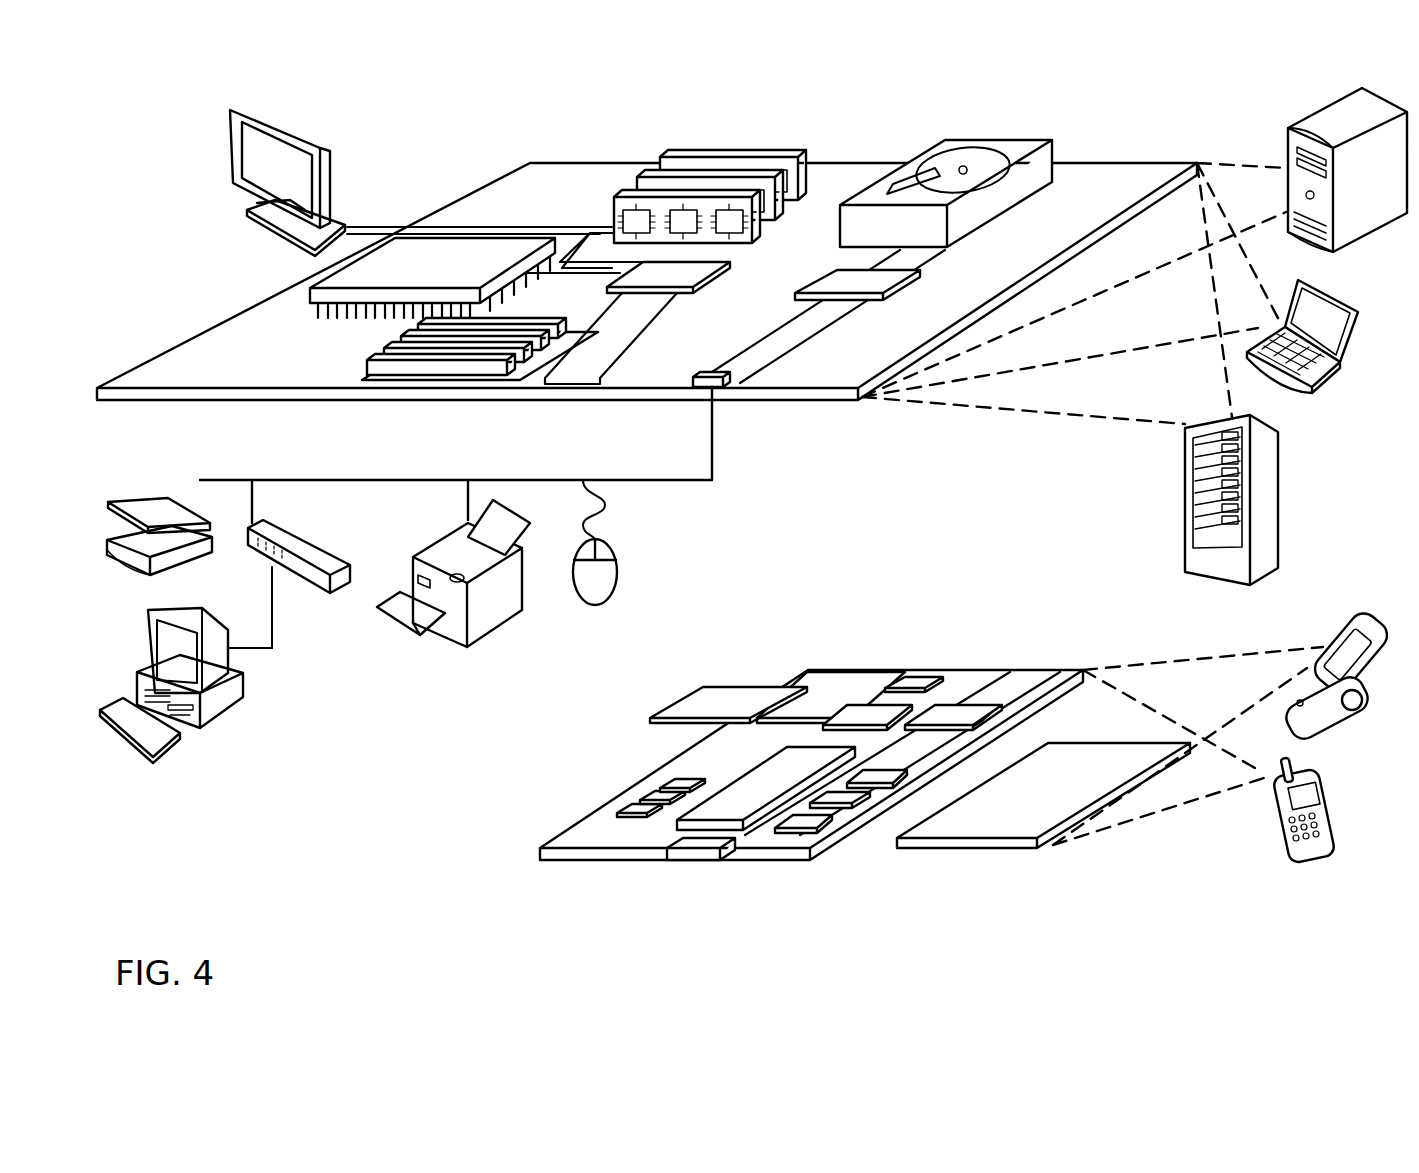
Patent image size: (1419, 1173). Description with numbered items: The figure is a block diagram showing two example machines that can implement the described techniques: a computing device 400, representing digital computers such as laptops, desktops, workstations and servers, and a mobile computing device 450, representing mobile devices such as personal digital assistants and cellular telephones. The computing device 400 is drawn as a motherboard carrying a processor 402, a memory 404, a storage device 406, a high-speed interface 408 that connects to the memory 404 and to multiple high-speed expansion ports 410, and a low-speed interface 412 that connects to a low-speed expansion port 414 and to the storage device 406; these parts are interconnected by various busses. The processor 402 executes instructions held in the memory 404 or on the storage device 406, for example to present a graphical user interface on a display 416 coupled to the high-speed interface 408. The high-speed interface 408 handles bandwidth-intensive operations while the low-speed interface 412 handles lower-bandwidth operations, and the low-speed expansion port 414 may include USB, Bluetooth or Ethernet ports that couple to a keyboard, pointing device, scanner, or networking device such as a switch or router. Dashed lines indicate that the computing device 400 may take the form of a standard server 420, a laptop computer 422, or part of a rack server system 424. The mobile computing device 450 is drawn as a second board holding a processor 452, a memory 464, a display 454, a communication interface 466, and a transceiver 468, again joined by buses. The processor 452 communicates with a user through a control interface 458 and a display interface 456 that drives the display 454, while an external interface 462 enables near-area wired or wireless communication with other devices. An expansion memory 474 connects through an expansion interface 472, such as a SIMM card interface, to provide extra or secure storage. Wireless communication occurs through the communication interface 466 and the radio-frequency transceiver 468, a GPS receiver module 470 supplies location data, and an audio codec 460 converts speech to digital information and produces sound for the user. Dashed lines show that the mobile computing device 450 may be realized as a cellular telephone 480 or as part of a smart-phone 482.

The computing device 400 is at (452, 134).
The processor 402 is at (315, 300).
The memory 404 is at (688, 167).
The storage device 406 is at (940, 150).
The high-speed interface 408 is at (637, 282).
The high-speed expansion ports 410 is at (375, 355).
The low-speed interface 412 is at (838, 286).
The low-speed expansion port 414 is at (728, 400).
The display 416 is at (238, 110).
The standard server 420 is at (1288, 149).
The laptop computer 422 is at (1300, 393).
The rack server system 424 is at (1186, 528).
The mobile computing device 450 is at (512, 858).
The processor 452 is at (737, 815).
The display 454 is at (997, 835).
The display interface 456 is at (815, 832).
The control interface 458 is at (850, 806).
The audio codec 460 is at (878, 785).
The external interface 462 is at (697, 850).
The memory 464 is at (636, 806).
The communication interface 466 is at (870, 715).
The transceiver 468 is at (955, 710).
The GPS receiver module 470 is at (925, 677).
The expansion interface 472 is at (790, 690).
The expansion memory 474 is at (708, 688).
The cellular telephone 480 is at (1330, 630).
The smart-phone 482 is at (1272, 808).